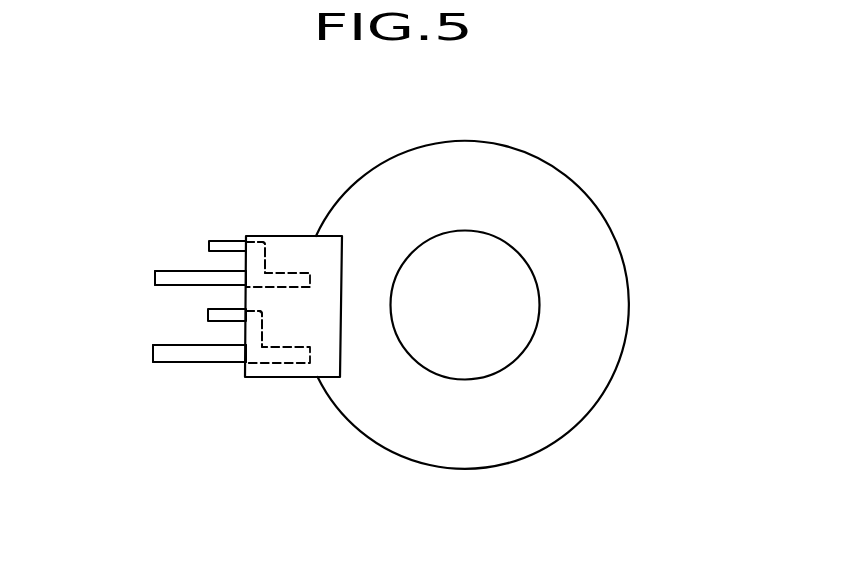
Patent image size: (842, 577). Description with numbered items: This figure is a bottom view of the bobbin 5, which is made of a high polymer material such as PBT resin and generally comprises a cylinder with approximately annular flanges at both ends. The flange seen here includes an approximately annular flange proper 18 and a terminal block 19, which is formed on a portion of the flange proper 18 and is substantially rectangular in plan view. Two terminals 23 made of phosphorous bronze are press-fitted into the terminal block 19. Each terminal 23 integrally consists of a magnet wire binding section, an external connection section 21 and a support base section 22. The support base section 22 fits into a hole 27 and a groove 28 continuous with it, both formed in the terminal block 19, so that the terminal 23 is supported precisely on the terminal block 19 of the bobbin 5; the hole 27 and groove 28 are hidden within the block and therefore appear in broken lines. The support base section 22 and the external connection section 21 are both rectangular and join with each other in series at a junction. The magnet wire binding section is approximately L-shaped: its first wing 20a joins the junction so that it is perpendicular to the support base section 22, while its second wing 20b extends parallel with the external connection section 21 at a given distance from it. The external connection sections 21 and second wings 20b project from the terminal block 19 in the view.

The bobbin 5 is at (607, 195).
The flange proper 18 is at (555, 405).
The terminal block 19 is at (327, 335).
The first wing 20a is at (247, 288).
The second wing 20b is at (227, 247).
The external connection section 21 is at (165, 280).
The support base section 22 is at (321, 331).
The terminal 23 is at (178, 238).
The hole 27 is at (288, 273).
The groove 28 is at (262, 244).